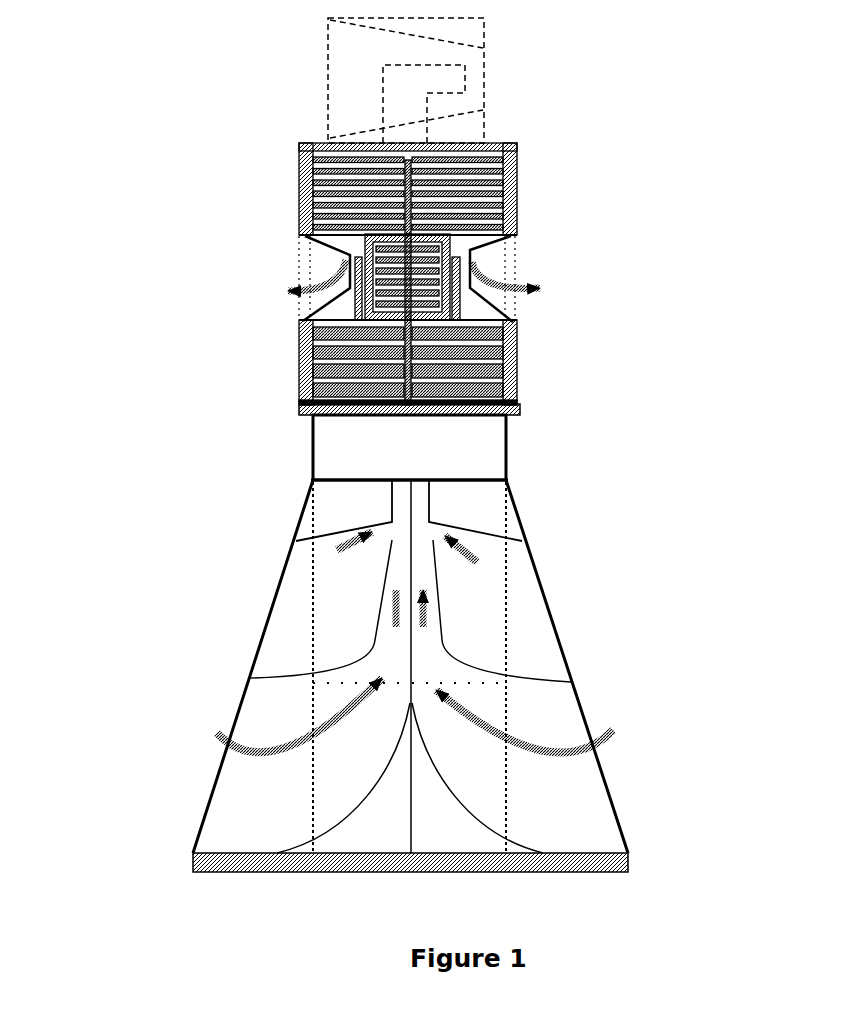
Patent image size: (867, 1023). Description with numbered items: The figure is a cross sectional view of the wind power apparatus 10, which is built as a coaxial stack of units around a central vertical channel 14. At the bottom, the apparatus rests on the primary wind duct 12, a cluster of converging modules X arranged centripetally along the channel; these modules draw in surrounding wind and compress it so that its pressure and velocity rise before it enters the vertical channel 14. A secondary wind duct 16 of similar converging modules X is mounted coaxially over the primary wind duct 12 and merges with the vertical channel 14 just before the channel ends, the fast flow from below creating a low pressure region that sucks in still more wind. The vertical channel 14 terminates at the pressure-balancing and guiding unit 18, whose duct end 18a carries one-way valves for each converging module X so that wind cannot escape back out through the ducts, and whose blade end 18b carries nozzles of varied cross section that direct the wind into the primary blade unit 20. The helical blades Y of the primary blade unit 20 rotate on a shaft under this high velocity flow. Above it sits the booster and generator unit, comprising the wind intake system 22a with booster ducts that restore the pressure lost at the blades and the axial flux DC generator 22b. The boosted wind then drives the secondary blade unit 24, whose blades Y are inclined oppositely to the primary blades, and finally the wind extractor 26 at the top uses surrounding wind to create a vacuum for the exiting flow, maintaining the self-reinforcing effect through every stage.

The apparatus 10 is at (166, 110).
The primary wind duct 12 is at (608, 783).
The central vertical channel 14 is at (435, 627).
The secondary wind duct 16 is at (547, 583).
The pressure-balancing and guiding unit 18 is at (509, 442).
The duct end 18a is at (510, 480).
The blade end 18b is at (520, 409).
The primary blade unit 20 is at (517, 370).
The wind intake system 22a is at (466, 274).
The axial flux DC generator 22b is at (450, 303).
The secondary blade unit 24 is at (517, 193).
The wind extractor 26 is at (487, 71).
The converging module X is at (345, 669).
The blade Y is at (314, 194).